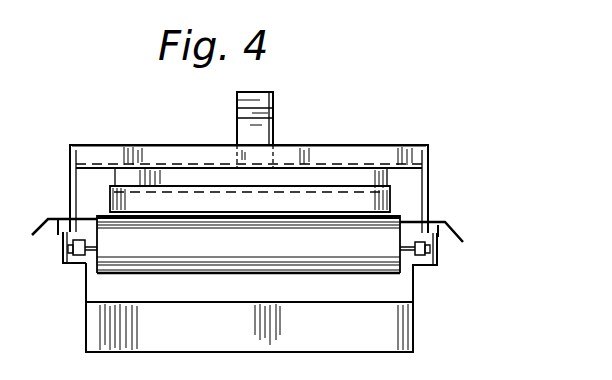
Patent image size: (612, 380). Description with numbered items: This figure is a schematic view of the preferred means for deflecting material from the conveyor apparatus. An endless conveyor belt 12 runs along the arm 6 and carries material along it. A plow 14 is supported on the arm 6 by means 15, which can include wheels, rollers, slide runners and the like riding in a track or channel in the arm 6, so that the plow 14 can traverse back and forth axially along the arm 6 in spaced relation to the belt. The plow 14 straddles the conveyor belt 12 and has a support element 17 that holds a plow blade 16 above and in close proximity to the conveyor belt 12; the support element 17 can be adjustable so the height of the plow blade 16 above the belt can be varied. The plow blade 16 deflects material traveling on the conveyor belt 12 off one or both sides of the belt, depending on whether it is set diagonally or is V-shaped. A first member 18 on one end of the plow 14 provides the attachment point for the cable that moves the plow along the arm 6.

The arm 6 is at (413, 333).
The endless conveyor belt 12 is at (378, 217).
The plow 14 is at (428, 182).
The support means 15 is at (436, 253).
The plow blade 16 is at (335, 207).
The support element 17 is at (343, 155).
The first member 18 is at (273, 118).